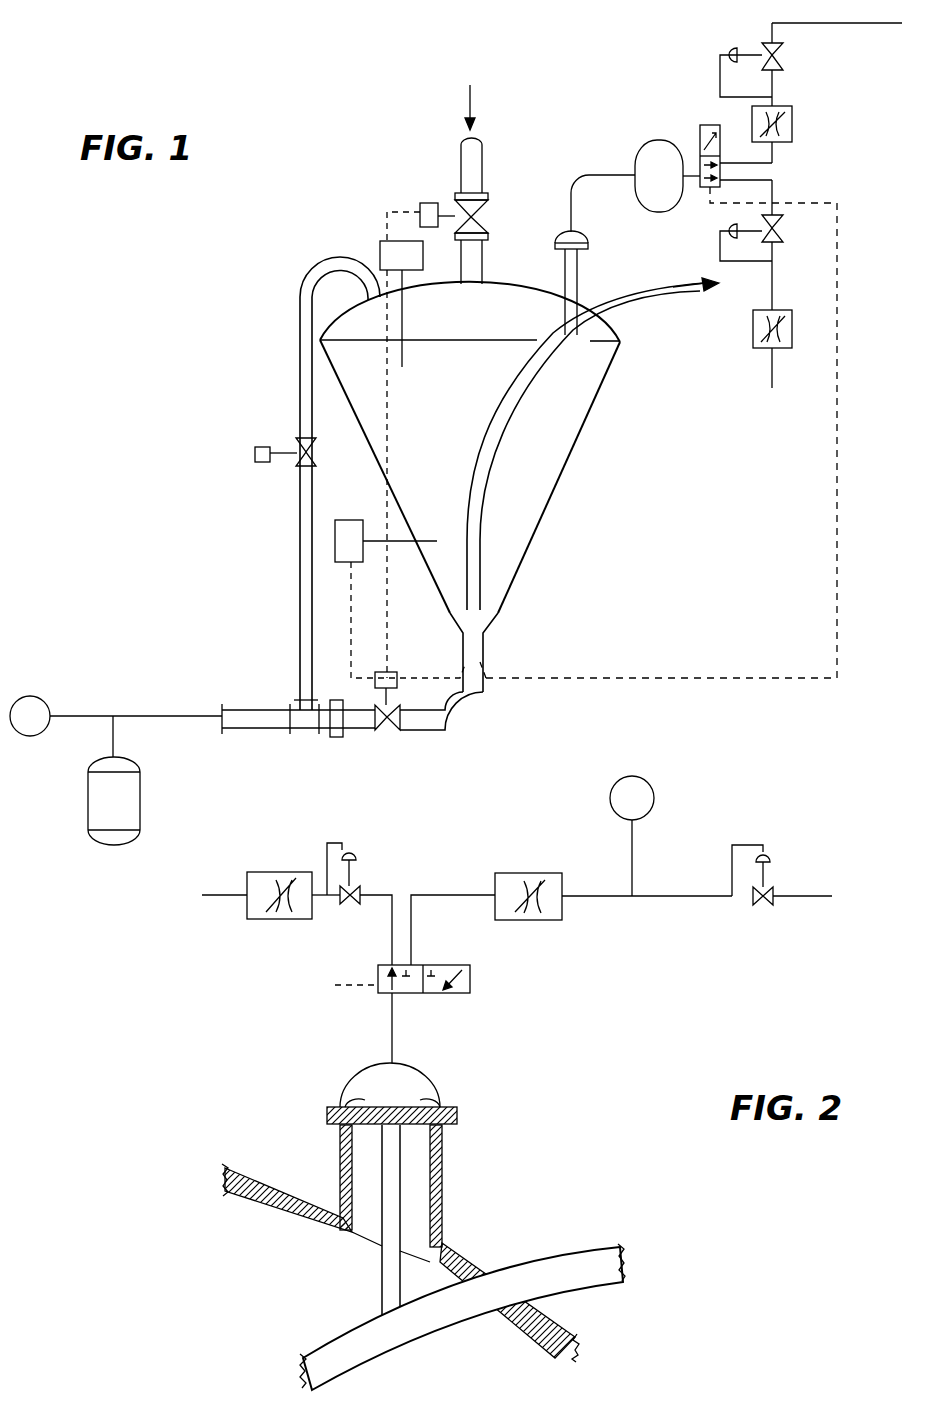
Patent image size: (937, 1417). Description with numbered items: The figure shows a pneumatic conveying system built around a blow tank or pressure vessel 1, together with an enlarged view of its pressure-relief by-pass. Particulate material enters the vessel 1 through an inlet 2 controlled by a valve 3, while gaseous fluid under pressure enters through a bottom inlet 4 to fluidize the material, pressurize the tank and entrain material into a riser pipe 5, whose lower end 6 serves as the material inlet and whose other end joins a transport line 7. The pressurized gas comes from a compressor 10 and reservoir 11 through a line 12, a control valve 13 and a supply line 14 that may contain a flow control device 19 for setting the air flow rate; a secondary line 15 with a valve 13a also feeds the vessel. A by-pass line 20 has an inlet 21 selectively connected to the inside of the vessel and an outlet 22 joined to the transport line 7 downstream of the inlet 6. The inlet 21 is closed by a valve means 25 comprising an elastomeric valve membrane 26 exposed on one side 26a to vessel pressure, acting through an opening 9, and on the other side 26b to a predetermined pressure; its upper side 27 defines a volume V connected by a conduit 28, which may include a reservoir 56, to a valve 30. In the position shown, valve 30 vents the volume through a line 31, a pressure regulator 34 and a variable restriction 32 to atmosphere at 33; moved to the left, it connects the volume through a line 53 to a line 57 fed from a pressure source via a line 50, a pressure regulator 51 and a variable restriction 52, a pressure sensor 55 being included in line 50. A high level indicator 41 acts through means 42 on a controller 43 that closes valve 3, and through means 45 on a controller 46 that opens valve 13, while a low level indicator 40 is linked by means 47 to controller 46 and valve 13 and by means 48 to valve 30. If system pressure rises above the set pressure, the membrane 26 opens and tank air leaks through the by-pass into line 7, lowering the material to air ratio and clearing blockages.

In FIG. 1, the pressure vessel 1 is at (573, 457).
In FIG. 2, the pressure vessel 1 is at (575, 1330).
In FIG. 1, the inlet 2 is at (494, 258).
In FIG. 1, the valve 3 is at (484, 206).
In FIG. 1, the inlet for gaseous fluid 4 is at (484, 650).
In FIG. 1, the riser pipe 5 is at (490, 452).
In FIG. 2, the riser pipe 5 is at (327, 1370).
In FIG. 1, the lower end 6 is at (476, 606).
In FIG. 1, the transport line 7 is at (632, 318).
In FIG. 2, the opening 9 is at (415, 1212).
In FIG. 1, the compressor 10 is at (40, 736).
In FIG. 1, the reservoir 11 is at (88, 792).
In FIG. 1, the line 12 is at (153, 720).
In FIG. 1, the control valve 13 is at (400, 732).
In FIG. 1, the valve 13a is at (253, 464).
In FIG. 1, the supply line 14 is at (480, 708).
In FIG. 1, the secondary line 15 is at (300, 403).
In FIG. 1, the flow control device 19 is at (343, 738).
In FIG. 1, the by-pass line 20 is at (562, 300).
In FIG. 2, the by-pass line 20 is at (382, 1245).
In FIG. 2, the inlet 21 is at (402, 1125).
In FIG. 2, the outlet 22 is at (382, 1314).
In FIG. 1, the valve means 25 is at (612, 230).
In FIG. 2, the valve means 25 is at (444, 1083).
In FIG. 2, the valve membrane 26 is at (427, 1100).
In FIG. 2, the one side 26a is at (350, 1132).
In FIG. 2, the other side 26b is at (347, 1100).
In FIG. 2, the upper side 27 is at (420, 1047).
In FIG. 1, the conduit 28 is at (570, 222).
In FIG. 2, the conduit 28 is at (392, 1025).
In FIG. 1, the valve 30 is at (705, 123).
In FIG. 2, the valve 30 is at (478, 976).
In FIG. 2, the line 31 is at (392, 938).
In FIG. 1, the variable restriction 32 is at (762, 350).
In FIG. 2, the variable restriction 32 is at (249, 871).
In FIG. 1, the atmosphere 33 is at (772, 386).
In FIG. 2, the atmosphere 33 is at (210, 897).
In FIG. 1, the pressure regulator 34 is at (779, 237).
In FIG. 2, the pressure regulator 34 is at (360, 886).
In FIG. 1, the low level indicator 40 is at (423, 541).
In FIG. 1, the high level indicator 41 is at (403, 306).
In FIG. 1, the means 42 is at (387, 212).
In FIG. 1, the controller 43 is at (427, 203).
In FIG. 1, the means 45 is at (388, 428).
In FIG. 1, the controller 46 is at (410, 662).
In FIG. 1, the means 47 is at (351, 631).
In FIG. 1, the means 48 is at (868, 230).
In FIG. 2, the means 48 is at (335, 985).
In FIG. 1, the line 50 is at (848, 23).
In FIG. 2, the line 50 is at (795, 895).
In FIG. 1, the pressure regulator 51 is at (781, 50).
In FIG. 2, the pressure regulator 51 is at (755, 908).
In FIG. 1, the variable restriction 52 is at (792, 113).
In FIG. 2, the variable restriction 52 is at (563, 919).
In FIG. 2, the line 53 is at (462, 995).
In FIG. 2, the pressure sensor 55 is at (652, 790).
In FIG. 1, the reservoir 56 is at (639, 150).
In FIG. 2, the line 57 is at (433, 912).